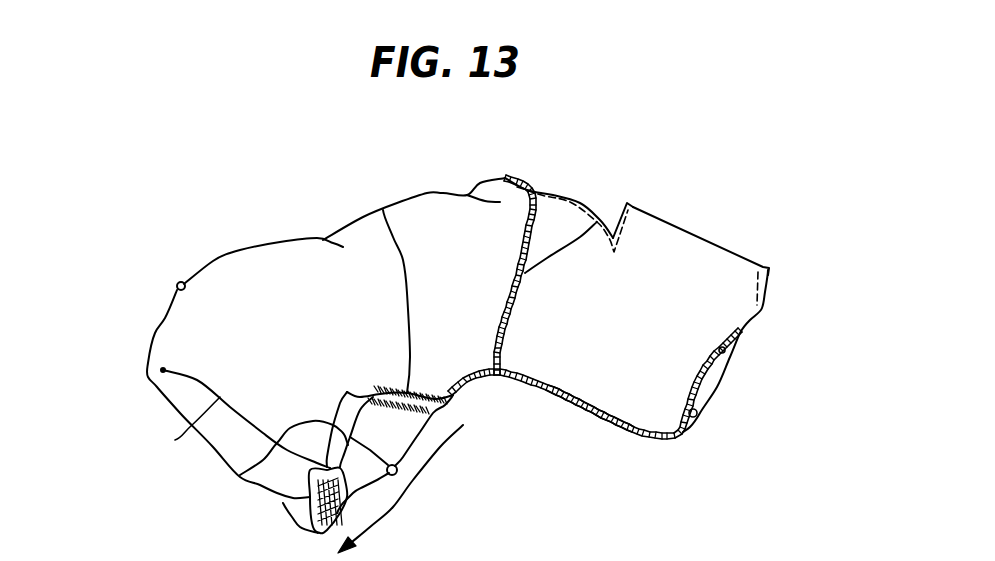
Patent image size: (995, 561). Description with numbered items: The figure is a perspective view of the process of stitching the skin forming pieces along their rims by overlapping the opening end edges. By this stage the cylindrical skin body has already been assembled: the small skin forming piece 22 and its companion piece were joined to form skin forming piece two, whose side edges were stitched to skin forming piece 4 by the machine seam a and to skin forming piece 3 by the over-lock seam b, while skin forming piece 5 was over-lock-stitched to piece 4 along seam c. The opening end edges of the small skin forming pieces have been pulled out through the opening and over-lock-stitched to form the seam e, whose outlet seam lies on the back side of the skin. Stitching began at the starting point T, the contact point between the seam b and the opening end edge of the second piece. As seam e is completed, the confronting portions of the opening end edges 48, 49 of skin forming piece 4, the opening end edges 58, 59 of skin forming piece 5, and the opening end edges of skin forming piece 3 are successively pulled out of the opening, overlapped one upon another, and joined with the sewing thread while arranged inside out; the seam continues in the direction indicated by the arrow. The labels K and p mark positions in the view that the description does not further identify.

The skin forming piece 4 is at (362, 257).
The opening end edge 48 is at (383, 210).
The seam c is at (258, 310).
The skin forming piece 5 is at (173, 337).
The fold line K is at (175, 440).
The opening end edge 58 is at (240, 475).
The opening end edge 59 is at (283, 503).
The opening end edge 49 is at (440, 455).
The seam e is at (550, 400).
The stitched seam portion p is at (600, 425).
The seam b is at (703, 370).
The starting point T is at (673, 445).
The skin forming piece 3 is at (712, 392).
The seam a is at (598, 220).
The small skin forming piece 22 is at (672, 267).